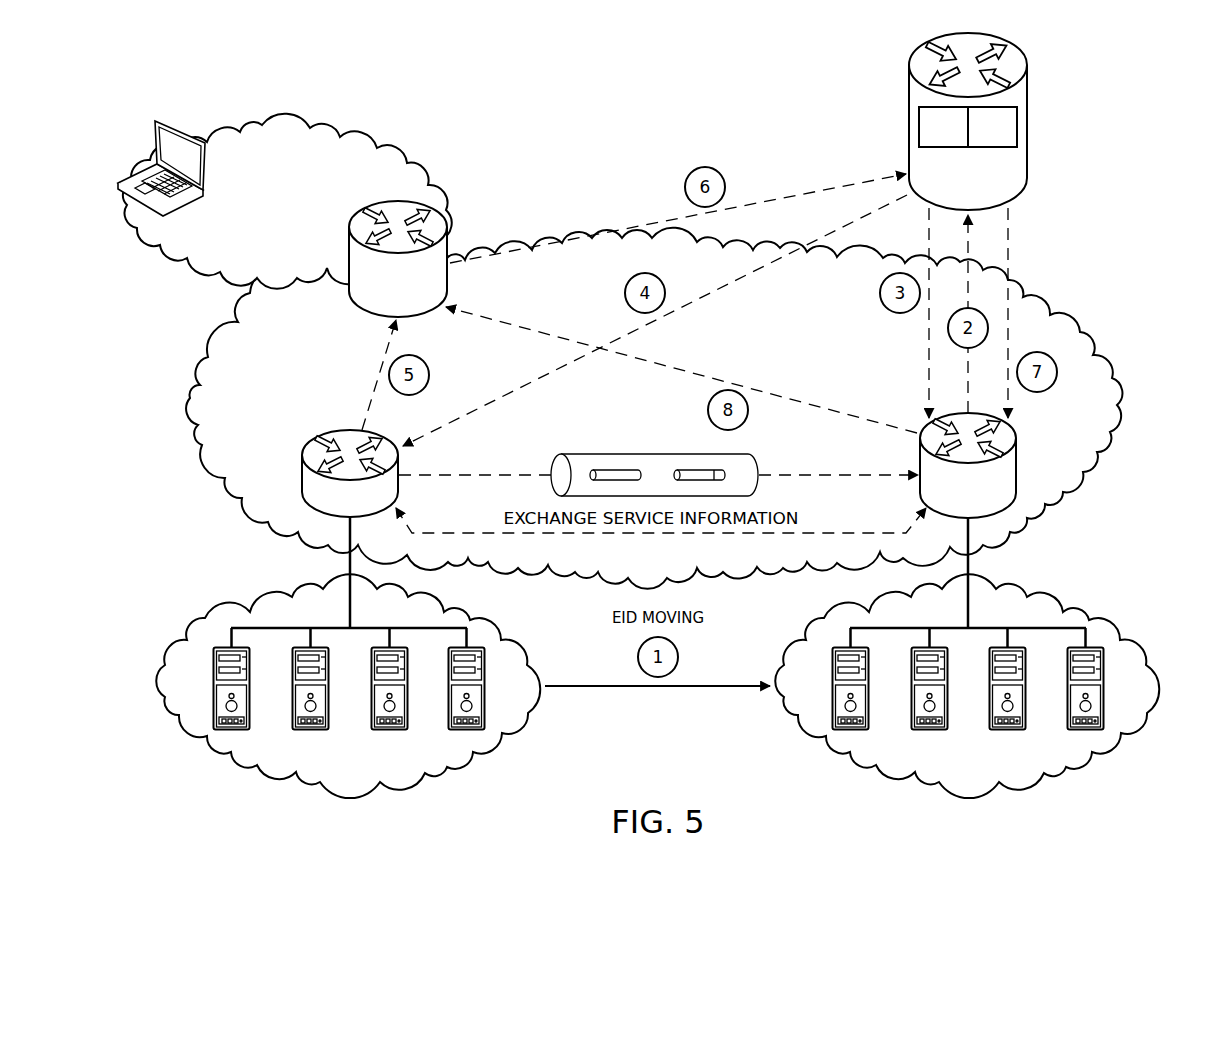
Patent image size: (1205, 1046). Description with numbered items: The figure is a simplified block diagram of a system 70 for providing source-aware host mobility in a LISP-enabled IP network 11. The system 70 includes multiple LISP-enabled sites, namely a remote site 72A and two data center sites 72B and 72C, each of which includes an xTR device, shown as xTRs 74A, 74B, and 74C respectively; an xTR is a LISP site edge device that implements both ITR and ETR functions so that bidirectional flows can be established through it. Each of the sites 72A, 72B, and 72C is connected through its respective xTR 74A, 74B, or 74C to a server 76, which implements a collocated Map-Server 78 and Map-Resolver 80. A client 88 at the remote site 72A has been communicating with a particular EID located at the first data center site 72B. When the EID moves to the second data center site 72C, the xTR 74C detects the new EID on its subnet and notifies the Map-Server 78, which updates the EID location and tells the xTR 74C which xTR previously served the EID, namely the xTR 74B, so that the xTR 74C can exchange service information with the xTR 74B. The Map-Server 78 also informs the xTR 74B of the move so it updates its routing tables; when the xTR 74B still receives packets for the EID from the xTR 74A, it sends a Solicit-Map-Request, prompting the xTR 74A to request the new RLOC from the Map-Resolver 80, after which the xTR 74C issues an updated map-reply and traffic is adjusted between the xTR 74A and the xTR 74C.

The IP network 11 is at (806, 372).
The system 70 is at (803, 96).
The remote LISP-enabled site 72A is at (265, 230).
The data center site 72B is at (331, 769).
The data center site 72C is at (949, 769).
The xTR 74A is at (368, 315).
The xTR 74B is at (338, 432).
The xTR 74C is at (1020, 465).
The server 76 is at (1001, 121).
The Map-Server 78 is at (990, 148).
The Map-Resolver 80 is at (945, 148).
The client 88 is at (140, 176).